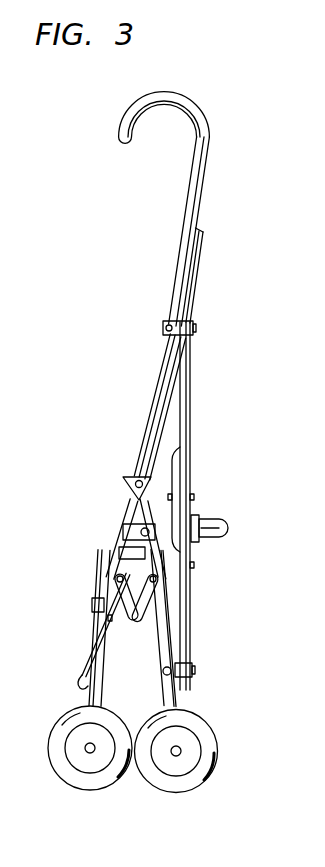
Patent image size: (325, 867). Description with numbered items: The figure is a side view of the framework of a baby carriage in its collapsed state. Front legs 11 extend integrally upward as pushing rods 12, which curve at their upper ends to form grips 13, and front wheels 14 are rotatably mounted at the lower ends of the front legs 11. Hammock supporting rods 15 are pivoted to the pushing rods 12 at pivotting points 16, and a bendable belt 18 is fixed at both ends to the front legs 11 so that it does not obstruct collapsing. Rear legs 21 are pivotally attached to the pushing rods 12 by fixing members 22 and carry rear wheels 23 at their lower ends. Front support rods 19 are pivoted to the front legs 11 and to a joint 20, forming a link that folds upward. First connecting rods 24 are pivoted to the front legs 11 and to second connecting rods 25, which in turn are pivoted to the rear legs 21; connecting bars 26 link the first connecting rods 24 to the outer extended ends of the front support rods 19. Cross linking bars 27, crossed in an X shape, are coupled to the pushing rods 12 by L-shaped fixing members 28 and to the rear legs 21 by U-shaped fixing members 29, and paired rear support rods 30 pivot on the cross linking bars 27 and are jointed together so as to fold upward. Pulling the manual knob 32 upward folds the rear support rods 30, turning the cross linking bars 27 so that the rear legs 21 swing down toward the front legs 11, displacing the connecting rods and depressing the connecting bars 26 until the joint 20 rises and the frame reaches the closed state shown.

The front leg 11 is at (101, 692).
The pushing rod 12 is at (182, 236).
The grip 13 is at (193, 99).
The front wheel 14 is at (78, 778).
The hammock supporting rod 15 is at (197, 281).
The pivotting point 16 is at (152, 405).
The belt 18 is at (122, 549).
The front support rod 19 is at (90, 630).
The joint 20 is at (95, 603).
The rear leg 21 is at (176, 635).
The fixing member 22 is at (120, 527).
The rear wheel 23 is at (192, 784).
The first connecting rod 24 is at (127, 628).
The second connecting rod 25 is at (178, 609).
The connecting bar 26 is at (78, 676).
The cross linking bar 27 is at (191, 395).
The L letter shaped fixing member 28 is at (163, 329).
The U letter shaped fixing member 29 is at (186, 680).
The rear support rod 30 is at (200, 532).
The manual knob 32 is at (212, 519).